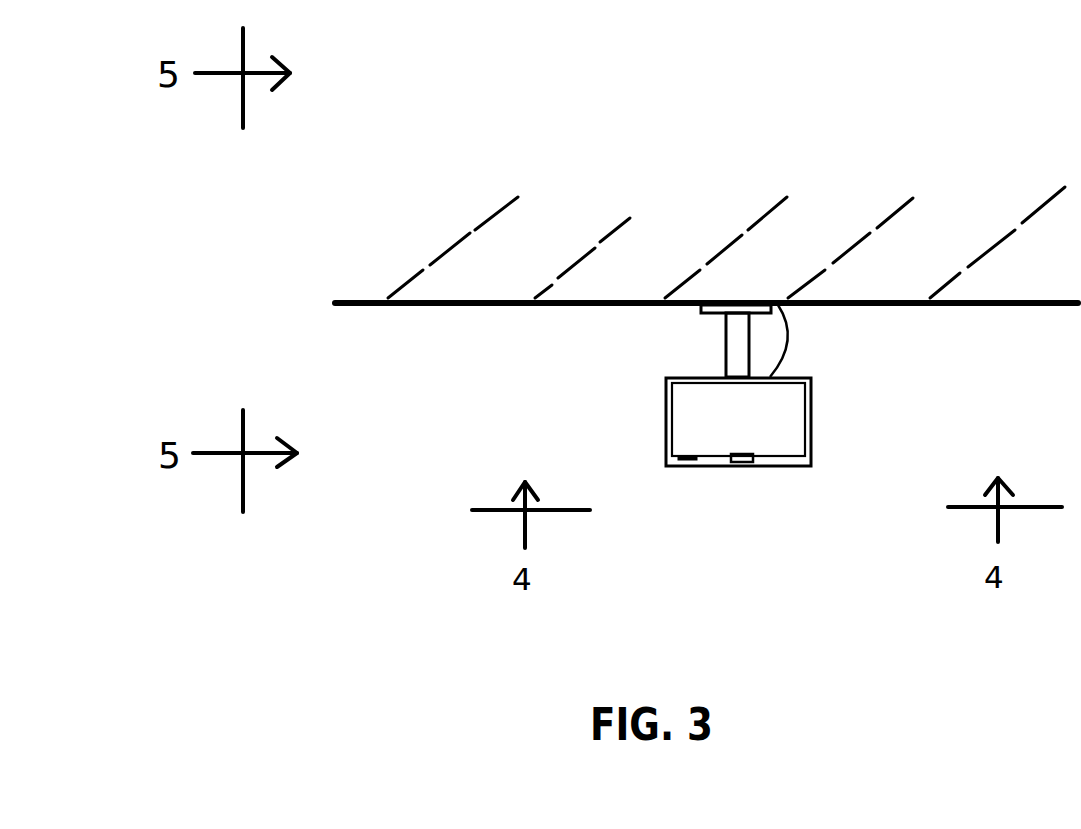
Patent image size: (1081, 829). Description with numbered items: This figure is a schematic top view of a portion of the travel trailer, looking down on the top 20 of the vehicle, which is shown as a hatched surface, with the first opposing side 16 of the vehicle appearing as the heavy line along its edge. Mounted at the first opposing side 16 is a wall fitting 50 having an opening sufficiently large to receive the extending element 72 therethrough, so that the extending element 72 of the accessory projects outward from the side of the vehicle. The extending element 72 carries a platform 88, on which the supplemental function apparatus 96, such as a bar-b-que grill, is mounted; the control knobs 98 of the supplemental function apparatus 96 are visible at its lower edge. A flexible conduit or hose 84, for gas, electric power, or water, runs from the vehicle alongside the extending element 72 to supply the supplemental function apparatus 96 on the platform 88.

The first opposing side 16 is at (556, 306).
The top 20 is at (584, 172).
The wall fitting 50 is at (708, 314).
The extending element 72 is at (733, 343).
The flexible conduit or hose 84 is at (788, 333).
The platform 88 is at (812, 417).
The supplemental function apparatus 96 is at (768, 429).
The control knobs 98 is at (742, 463).